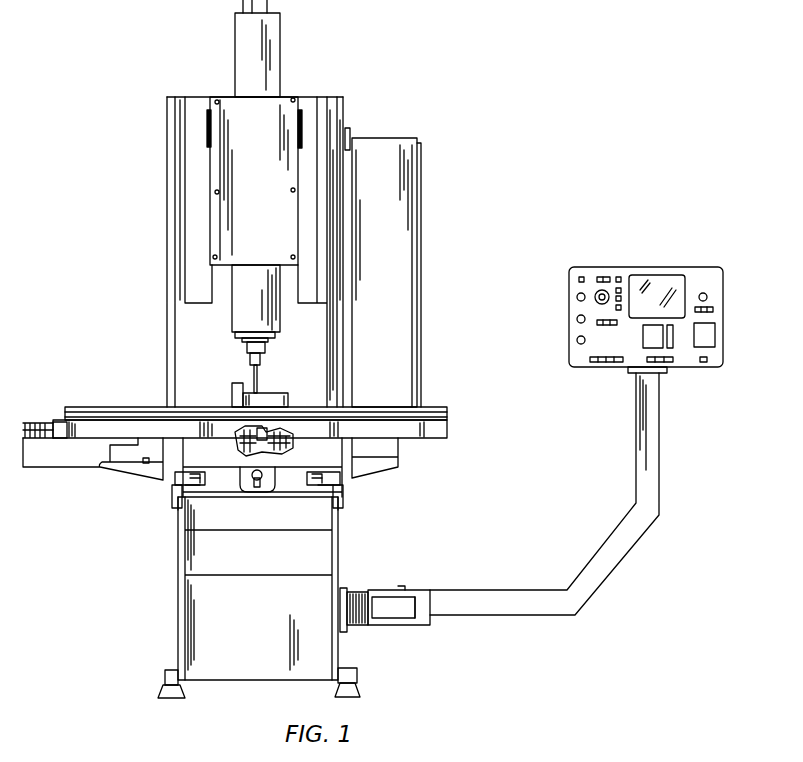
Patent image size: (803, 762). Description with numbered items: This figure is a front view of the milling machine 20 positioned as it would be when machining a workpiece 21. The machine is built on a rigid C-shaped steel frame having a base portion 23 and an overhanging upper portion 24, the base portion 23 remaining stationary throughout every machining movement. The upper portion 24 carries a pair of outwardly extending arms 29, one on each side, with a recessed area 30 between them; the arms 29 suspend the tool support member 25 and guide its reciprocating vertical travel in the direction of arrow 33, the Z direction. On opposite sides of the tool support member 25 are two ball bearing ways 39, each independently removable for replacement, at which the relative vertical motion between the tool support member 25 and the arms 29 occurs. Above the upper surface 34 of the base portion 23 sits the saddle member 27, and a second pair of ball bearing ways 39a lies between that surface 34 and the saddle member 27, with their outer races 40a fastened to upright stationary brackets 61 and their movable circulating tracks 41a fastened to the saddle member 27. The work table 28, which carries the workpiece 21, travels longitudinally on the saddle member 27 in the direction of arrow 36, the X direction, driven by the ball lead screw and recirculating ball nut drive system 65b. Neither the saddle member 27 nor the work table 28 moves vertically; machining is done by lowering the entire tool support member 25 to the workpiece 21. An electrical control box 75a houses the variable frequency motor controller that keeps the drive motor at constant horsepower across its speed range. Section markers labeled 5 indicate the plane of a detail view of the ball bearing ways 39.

The section line of FIG. 5 is at (192, 165).
The milling machine 20 is at (478, 136).
The workpiece 21 is at (278, 393).
The base portion 23 is at (178, 632).
The overhanging upper portion 24 is at (382, 121).
The tool support member 25 is at (210, 225).
The saddle member 27 is at (163, 480).
The work table 28 is at (102, 407).
The outwardly extending arms 29 is at (178, 97).
The recessed area 30 is at (285, 90).
The arrow 33 is at (502, 231).
The upper surface 34 is at (278, 492).
The arrow 36 is at (551, 475).
The ball bearing ways 39 is at (192, 133).
The ball bearing ways 39a is at (170, 523).
The outer races 40a is at (192, 478).
The movable circulating tracks 41a is at (172, 483).
The upright stationary brackets 61 is at (205, 482).
The ball lead screw and recirculating ball nut drive system 65b is at (250, 431).
The electrical control box 75a is at (403, 307).